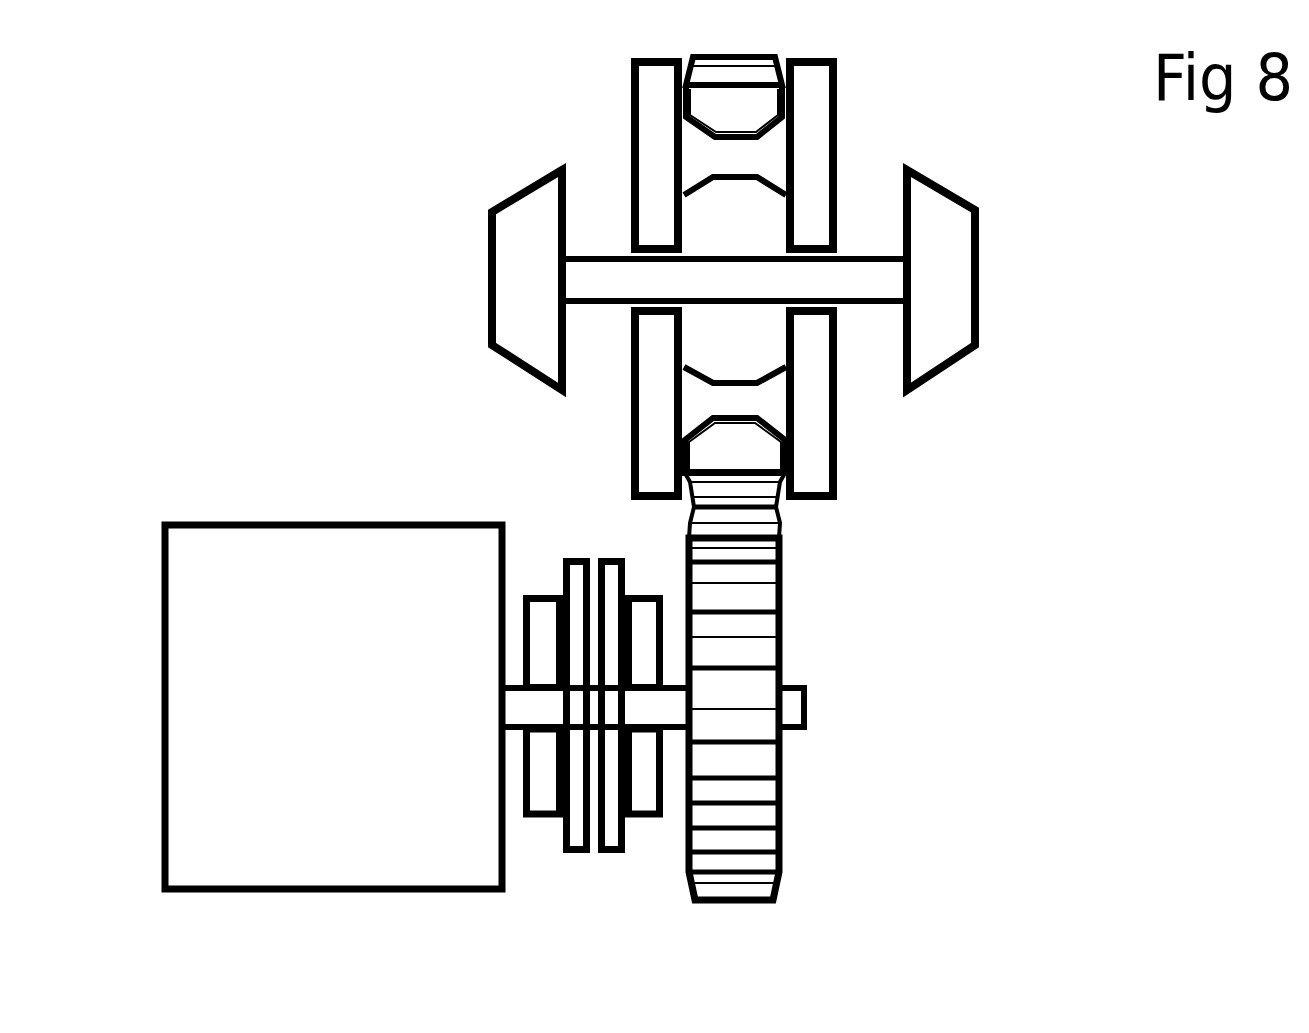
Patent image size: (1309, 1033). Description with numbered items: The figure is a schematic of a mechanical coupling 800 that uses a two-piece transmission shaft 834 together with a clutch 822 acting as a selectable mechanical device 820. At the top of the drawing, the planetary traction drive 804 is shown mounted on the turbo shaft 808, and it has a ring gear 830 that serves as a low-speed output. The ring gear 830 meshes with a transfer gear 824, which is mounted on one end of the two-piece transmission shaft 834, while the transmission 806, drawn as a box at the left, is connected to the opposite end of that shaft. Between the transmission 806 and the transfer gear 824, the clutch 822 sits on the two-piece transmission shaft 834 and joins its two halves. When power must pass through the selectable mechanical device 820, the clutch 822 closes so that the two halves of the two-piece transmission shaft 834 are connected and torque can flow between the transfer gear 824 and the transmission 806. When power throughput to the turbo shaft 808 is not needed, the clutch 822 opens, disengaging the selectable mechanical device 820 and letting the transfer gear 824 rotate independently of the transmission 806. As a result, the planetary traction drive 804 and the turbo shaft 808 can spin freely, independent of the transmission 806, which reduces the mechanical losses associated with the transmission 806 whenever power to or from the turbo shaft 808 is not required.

The mechanical coupling 800 is at (317, 187).
The planetary traction drive 804 is at (858, 358).
The transmission 806 is at (333, 707).
The turbo shaft 808 is at (598, 273).
The selectable mechanical device 820 is at (650, 583).
The clutch 822 is at (607, 833).
The transfer gear 824 is at (763, 833).
The ring gear 830 is at (690, 487).
The two-piece transmission shaft 834 is at (648, 704).